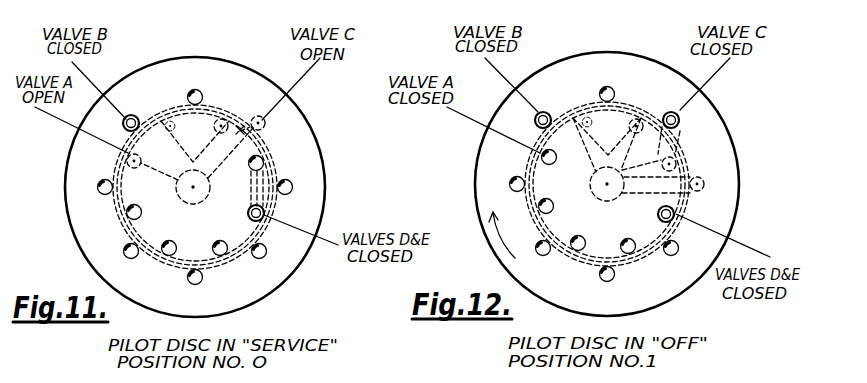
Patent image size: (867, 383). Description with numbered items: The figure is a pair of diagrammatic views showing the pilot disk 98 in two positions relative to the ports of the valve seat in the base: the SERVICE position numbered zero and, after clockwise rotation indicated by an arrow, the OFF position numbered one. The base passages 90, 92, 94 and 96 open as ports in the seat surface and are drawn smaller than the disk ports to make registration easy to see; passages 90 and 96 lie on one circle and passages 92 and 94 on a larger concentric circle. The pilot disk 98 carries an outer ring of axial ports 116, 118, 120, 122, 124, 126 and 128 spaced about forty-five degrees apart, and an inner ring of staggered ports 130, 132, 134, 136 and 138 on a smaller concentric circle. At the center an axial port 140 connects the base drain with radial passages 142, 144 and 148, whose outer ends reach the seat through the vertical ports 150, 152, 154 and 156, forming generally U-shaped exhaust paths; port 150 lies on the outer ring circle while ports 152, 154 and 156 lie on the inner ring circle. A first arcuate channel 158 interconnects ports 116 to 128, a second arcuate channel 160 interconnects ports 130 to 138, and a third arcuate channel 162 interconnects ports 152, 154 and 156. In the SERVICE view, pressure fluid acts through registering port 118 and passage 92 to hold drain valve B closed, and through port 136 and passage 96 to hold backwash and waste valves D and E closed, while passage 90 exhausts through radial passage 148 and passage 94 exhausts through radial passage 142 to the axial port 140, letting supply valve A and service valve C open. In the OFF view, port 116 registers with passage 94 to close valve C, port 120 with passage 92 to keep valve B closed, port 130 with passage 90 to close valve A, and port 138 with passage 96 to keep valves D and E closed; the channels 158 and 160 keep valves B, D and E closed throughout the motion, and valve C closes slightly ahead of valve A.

In FIG. 11, the axially extending passage 90 is at (132, 169).
In FIG. 12, the axially extending passage 90 is at (549, 126).
In FIG. 11, the axially extending passage 92 is at (122, 124).
In FIG. 12, the axially extending passage 92 is at (534, 120).
In FIG. 11, the axially extending passage 94 is at (266, 123).
In FIG. 12, the axially extending passage 94 is at (680, 121).
In FIG. 11, the axially extending passage 96 is at (248, 213).
In FIG. 12, the axially extending passage 96 is at (690, 199).
In FIG. 11, the pilot disk 98 is at (305, 147).
In FIG. 12, the pilot disk 98 is at (727, 155).
In FIG. 11, the port 116 is at (194, 89).
In FIG. 12, the port 116 is at (678, 128).
In FIG. 11, the port 118 is at (131, 116).
In FIG. 12, the port 118 is at (609, 86).
In FIG. 11, the port 120 is at (100, 184).
In FIG. 12, the port 120 is at (545, 111).
In FIG. 11, the port 122 is at (132, 259).
In FIG. 12, the port 122 is at (515, 178).
In FIG. 11, the port 124 is at (198, 280).
In FIG. 12, the port 124 is at (542, 256).
In FIG. 11, the port 126 is at (266, 251).
In FIG. 12, the port 126 is at (606, 282).
In FIG. 11, the port 128 is at (291, 185).
In FIG. 12, the port 128 is at (672, 257).
In FIG. 11, the port 130 is at (130, 224).
In FIG. 12, the port 130 is at (556, 164).
In FIG. 11, the port 132 is at (170, 258).
In FIG. 12, the port 132 is at (538, 208).
In FIG. 11, the port 134 is at (225, 254).
In FIG. 12, the port 134 is at (578, 251).
In FIG. 11, the port 136 is at (250, 208).
In FIG. 12, the port 136 is at (625, 239).
In FIG. 11, the port 138 is at (264, 165).
In FIG. 12, the port 138 is at (658, 216).
In FIG. 11, the axial port 140 is at (196, 205).
In FIG. 12, the axial port 140 is at (591, 188).
In FIG. 11, the radial passage 142 is at (241, 124).
In FIG. 12, the radial passage 142 is at (679, 172).
In FIG. 11, the radial passage 144 is at (172, 112).
In FIG. 12, the radial passage 144 is at (658, 112).
In FIG. 11, the radial passage 148 is at (192, 171).
In FIG. 12, the radial passage 148 is at (607, 145).
In FIG. 11, the axial passage 150 is at (266, 129).
In FIG. 11, the port 152 is at (237, 105).
In FIG. 11, the port 154 is at (155, 100).
In FIG. 12, the port 154 is at (645, 98).
In FIG. 11, the port 156 is at (144, 203).
In FIG. 12, the port 156 is at (573, 98).
In FIG. 11, the first arcuate channel 158 is at (108, 232).
In FIG. 12, the first arcuate channel 158 is at (594, 90).
In FIG. 11, the second arcuate channel 160 is at (195, 187).
In FIG. 12, the second arcuate channel 160 is at (607, 184).
In FIG. 11, the third arcuate channel 162 is at (221, 118).
In FIG. 12, the third arcuate channel 162 is at (635, 118).